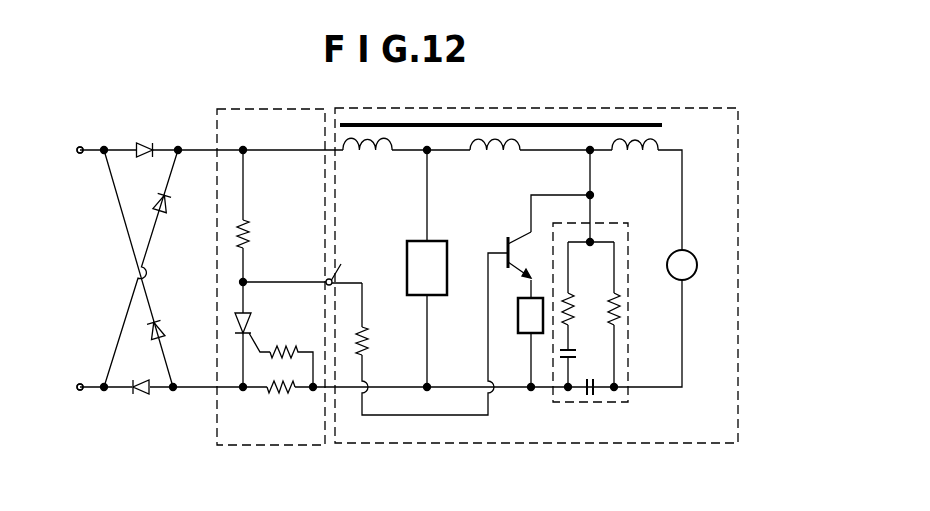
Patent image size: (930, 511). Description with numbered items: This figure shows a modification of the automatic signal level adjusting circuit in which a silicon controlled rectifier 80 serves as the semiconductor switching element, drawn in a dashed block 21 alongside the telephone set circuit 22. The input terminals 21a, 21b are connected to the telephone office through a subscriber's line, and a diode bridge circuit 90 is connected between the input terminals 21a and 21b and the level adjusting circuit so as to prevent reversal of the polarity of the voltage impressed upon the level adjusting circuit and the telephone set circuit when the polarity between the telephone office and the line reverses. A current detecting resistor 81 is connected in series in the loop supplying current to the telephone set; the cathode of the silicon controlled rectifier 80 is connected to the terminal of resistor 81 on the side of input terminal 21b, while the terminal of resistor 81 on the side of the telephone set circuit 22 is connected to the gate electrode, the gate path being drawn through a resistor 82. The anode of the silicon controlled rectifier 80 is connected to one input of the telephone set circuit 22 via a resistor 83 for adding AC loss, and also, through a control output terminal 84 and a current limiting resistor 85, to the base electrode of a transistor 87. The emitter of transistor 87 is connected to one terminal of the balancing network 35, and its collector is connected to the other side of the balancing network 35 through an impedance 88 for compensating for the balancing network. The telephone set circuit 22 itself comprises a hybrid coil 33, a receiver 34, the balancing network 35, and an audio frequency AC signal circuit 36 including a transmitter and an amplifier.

The input terminal 21a is at (85, 136).
The input terminal 21b is at (85, 373).
The diode bridge circuit 90 is at (132, 396).
The switching circuit 21 is at (268, 445).
The resistor for adding AC loss 83 is at (254, 237).
The control output terminal 84 is at (344, 267).
The silicon controlled rectifier 80 is at (254, 330).
The resistor 82 is at (291, 352).
The current detecting resistor 81 is at (281, 401).
The current limiting resistor 85 is at (373, 343).
The audio frequency AC signal circuit 36 is at (427, 268).
The transistor 87 is at (525, 255).
The impedance for compensating for the balancing network 88 is at (530, 315).
The balancing network 35 is at (614, 223).
The hybrid coil 33 is at (609, 122).
The receiver 34 is at (693, 267).
The telephone set circuit 22 is at (530, 443).